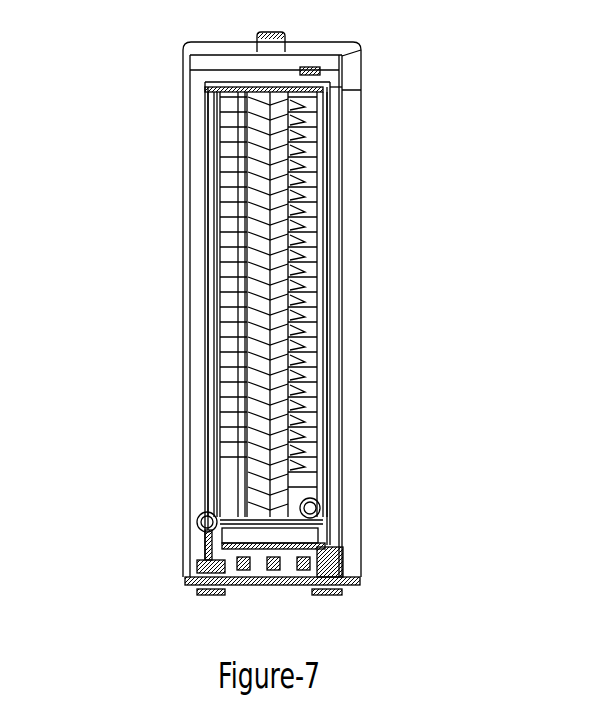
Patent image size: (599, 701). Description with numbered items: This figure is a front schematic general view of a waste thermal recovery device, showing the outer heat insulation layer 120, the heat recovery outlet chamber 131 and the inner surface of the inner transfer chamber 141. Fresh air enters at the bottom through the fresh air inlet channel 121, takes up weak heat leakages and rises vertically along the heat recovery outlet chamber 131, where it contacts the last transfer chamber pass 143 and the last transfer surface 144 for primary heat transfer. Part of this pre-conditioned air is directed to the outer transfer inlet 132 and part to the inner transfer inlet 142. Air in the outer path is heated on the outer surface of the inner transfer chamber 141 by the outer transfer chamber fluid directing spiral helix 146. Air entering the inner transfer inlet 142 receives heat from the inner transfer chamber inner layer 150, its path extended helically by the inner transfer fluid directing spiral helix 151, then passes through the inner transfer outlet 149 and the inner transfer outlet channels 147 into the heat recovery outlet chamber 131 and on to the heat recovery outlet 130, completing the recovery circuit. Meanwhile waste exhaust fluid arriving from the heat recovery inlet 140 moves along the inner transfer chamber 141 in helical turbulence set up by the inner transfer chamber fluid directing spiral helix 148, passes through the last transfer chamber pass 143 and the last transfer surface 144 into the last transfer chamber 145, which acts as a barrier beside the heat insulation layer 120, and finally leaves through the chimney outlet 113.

The chimney outlet 113 is at (257, 40).
The heat insulation layer 120 is at (183, 360).
The fresh air inlet channel 121 is at (185, 578).
The heat recovery outlet 130 is at (198, 516).
The heat recovery outlet chamber 131 is at (205, 133).
The outer transfer inlet 132 is at (214, 172).
The heat recovery inlet 140 is at (321, 503).
The inner transfer chamber 141 is at (190, 98).
The inner transfer inlet 142 is at (190, 74).
The last transfer chamber pass 143 is at (350, 91).
The last transfer surface 144 is at (320, 71).
The last transfer chamber 145 is at (358, 53).
The outer transfer chamber fluid directing spiral helix 146 is at (290, 238).
The inner transfer outlet channels 147 is at (343, 542).
The inner transfer chamber fluid directing spiral helix 148 is at (342, 125).
The inner transfer outlet 149 is at (250, 549).
The inner transfer chamber inner layer 150 is at (238, 300).
The inner transfer fluid directing spiral helix 151 is at (342, 282).